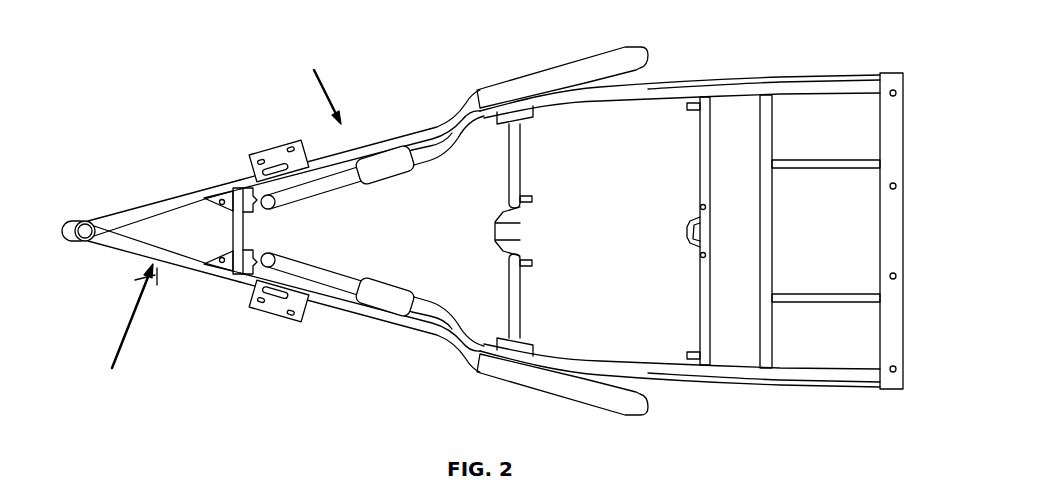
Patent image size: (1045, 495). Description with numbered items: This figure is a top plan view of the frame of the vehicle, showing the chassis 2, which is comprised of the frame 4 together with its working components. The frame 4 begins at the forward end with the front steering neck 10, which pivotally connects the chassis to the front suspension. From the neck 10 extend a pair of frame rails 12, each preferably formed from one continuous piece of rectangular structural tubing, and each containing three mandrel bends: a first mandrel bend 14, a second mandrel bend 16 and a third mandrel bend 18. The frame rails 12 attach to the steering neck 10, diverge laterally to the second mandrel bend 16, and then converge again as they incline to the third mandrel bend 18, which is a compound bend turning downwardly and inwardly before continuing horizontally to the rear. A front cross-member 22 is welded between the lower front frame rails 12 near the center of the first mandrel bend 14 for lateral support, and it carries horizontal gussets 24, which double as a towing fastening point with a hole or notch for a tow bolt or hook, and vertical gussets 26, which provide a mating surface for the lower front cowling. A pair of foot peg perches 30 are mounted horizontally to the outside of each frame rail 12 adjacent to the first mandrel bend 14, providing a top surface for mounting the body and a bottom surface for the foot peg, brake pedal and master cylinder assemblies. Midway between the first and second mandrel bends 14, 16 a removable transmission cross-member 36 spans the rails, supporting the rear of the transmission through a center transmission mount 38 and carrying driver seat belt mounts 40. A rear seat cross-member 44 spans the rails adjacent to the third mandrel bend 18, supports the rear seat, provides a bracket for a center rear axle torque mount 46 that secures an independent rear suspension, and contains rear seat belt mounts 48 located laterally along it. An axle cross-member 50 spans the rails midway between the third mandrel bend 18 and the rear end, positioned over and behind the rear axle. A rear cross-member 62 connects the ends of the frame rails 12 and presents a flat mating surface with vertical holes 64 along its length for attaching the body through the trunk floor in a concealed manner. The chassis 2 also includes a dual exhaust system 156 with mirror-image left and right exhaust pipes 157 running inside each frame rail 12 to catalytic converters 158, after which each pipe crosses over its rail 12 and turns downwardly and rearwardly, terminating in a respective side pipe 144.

The chassis 2 is at (322, 85).
The frame 4 is at (129, 327).
The front steering neck 10 is at (71, 221).
The frame rails 12 is at (420, 129).
The first mandrel bend 14 is at (226, 180).
The second mandrel bend 16 is at (584, 105).
The third mandrel bend 18 is at (628, 102).
The front cross-member 22 is at (226, 184).
The horizontal gussets 24 is at (251, 264).
The vertical gussets 26 is at (215, 258).
The foot peg perches 30 is at (274, 146).
The transmission cross-member 36 is at (520, 303).
The center transmission mount 38 is at (496, 234).
The driver seat belt mounts 40 is at (533, 263).
The rear seat cross-member 44 is at (711, 187).
The center rear axle torque mount 46 is at (696, 231).
The rear seat belt mounts 48 is at (700, 255).
The axle cross-member 50 is at (758, 292).
The rear cross-member 62 is at (888, 388).
The vertical holes 64 is at (890, 366).
The side pipes 144 is at (648, 58).
The dual exhaust system 156 is at (318, 182).
The exhaust pipes 157 is at (430, 166).
The catalytic converters 158 is at (380, 172).